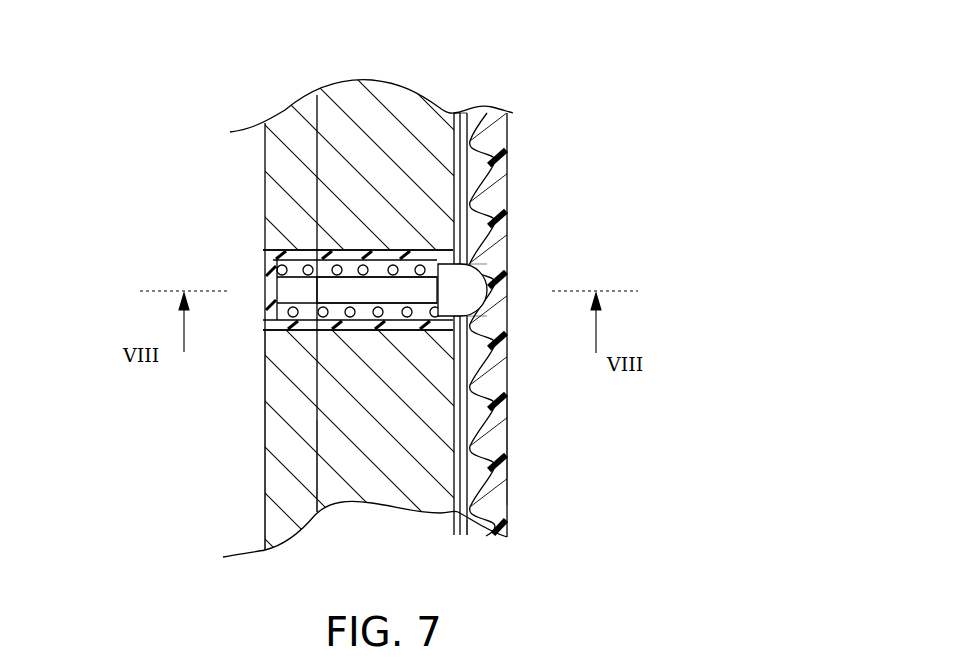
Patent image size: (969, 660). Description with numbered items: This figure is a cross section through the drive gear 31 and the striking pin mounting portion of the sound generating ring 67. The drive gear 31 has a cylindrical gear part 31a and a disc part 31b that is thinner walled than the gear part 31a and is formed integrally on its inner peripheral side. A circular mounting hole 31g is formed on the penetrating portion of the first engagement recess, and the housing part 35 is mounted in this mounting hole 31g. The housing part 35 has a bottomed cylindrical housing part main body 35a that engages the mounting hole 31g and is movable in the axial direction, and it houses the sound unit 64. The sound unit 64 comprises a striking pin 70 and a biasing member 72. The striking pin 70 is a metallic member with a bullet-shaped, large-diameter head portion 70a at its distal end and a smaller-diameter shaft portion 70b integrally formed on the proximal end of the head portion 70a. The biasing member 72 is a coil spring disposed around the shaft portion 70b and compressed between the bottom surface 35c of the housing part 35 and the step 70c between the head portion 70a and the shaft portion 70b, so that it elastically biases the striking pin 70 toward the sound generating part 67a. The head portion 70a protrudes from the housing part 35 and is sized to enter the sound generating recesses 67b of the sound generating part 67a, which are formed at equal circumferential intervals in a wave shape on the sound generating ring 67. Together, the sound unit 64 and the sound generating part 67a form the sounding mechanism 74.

The drive gear 31 is at (245, 475).
The gear part 31a is at (265, 448).
The disc part 31b is at (340, 485).
The mounting hole 31g is at (300, 292).
The housing part 35 is at (265, 231).
The housing part main body 35a is at (352, 250).
The bottom surface 35c is at (312, 332).
The sound unit 64 is at (83, 217).
The sound generating ring 67 is at (523, 140).
The sound generating part 67a is at (450, 507).
The sound generating recess 67b is at (508, 503).
The striking pin 70 is at (267, 275).
The head portion 70a is at (484, 276).
The shaft portion 70b is at (476, 228).
The step 70c is at (460, 325).
The biasing member 72 is at (267, 248).
The sounding mechanism 74 is at (272, 133).